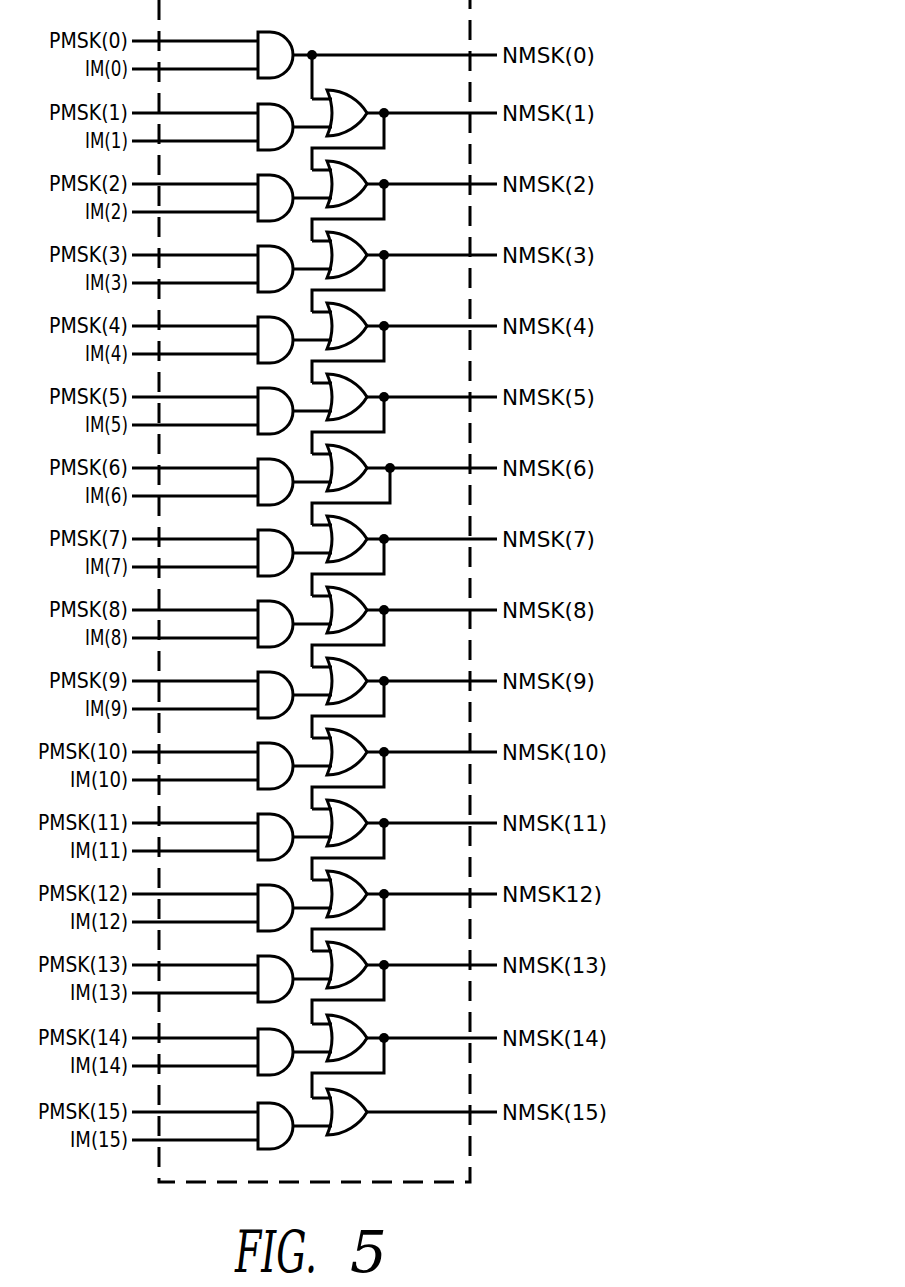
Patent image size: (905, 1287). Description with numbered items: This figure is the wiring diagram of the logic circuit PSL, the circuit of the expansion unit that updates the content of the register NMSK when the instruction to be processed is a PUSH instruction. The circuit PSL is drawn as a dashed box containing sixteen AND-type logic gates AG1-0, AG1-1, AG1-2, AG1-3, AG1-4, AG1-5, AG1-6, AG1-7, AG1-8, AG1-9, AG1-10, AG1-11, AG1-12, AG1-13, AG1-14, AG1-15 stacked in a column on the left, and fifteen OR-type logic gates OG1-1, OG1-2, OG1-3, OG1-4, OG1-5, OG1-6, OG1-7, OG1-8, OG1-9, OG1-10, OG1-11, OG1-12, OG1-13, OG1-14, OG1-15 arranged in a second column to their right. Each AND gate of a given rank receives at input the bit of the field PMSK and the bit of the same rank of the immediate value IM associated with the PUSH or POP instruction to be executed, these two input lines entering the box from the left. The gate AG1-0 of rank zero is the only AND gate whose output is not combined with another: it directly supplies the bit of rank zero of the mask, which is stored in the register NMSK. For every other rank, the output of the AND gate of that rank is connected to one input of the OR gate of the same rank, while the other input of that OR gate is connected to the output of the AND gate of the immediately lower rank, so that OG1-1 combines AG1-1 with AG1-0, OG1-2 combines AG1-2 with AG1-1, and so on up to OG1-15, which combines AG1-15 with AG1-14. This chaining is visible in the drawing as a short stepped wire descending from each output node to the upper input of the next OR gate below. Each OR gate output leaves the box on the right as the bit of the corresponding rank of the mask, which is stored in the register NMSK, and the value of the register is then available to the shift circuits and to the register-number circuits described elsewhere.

The logic circuit PSL is at (314, 591).
The AND-type logic gate AG1-0 is at (286, 40).
The AND-type logic gate AG1-1 is at (262, 107).
The AND-type logic gate AG1-2 is at (262, 178).
The AND-type logic gate AG1-3 is at (262, 249).
The AND-type logic gate AG1-4 is at (262, 320).
The AND-type logic gate AG1-5 is at (262, 391).
The AND-type logic gate AG1-6 is at (262, 462).
The AND-type logic gate AG1-7 is at (262, 533).
The AND-type logic gate AG1-8 is at (262, 604).
The AND-type logic gate AG1-9 is at (262, 675).
The AND-type logic gate AG1-10 is at (262, 746).
The AND-type logic gate AG1-11 is at (262, 817).
The AND-type logic gate AG1-12 is at (262, 888).
The AND-type logic gate AG1-13 is at (262, 959).
The AND-type logic gate AG1-14 is at (262, 1032).
The AND-type logic gate AG1-15 is at (262, 1147).
The OR-type logic gate OG1-1 is at (354, 98).
The OR-type logic gate OG1-2 is at (354, 169).
The OR-type logic gate OG1-3 is at (354, 240).
The OR-type logic gate OG1-4 is at (354, 311).
The OR-type logic gate OG1-5 is at (354, 382).
The OR-type logic gate OG1-6 is at (354, 453).
The OR-type logic gate OG1-7 is at (354, 524).
The OR-type logic gate OG1-8 is at (354, 595).
The OR-type logic gate OG1-9 is at (354, 666).
The OR-type logic gate OG1-10 is at (354, 737).
The OR-type logic gate OG1-11 is at (354, 808).
The OR-type logic gate OG1-12 is at (354, 879).
The OR-type logic gate OG1-13 is at (354, 950).
The OR-type logic gate OG1-14 is at (354, 1023).
The OR-type logic gate OG1-15 is at (354, 1097).